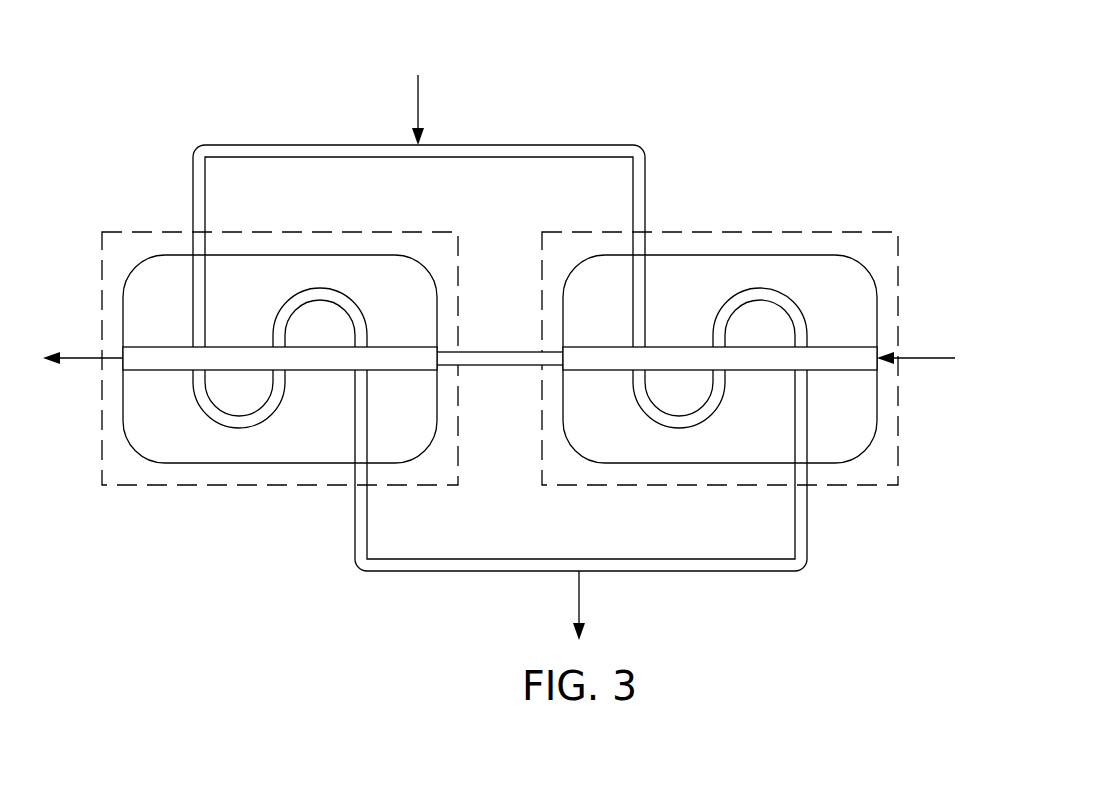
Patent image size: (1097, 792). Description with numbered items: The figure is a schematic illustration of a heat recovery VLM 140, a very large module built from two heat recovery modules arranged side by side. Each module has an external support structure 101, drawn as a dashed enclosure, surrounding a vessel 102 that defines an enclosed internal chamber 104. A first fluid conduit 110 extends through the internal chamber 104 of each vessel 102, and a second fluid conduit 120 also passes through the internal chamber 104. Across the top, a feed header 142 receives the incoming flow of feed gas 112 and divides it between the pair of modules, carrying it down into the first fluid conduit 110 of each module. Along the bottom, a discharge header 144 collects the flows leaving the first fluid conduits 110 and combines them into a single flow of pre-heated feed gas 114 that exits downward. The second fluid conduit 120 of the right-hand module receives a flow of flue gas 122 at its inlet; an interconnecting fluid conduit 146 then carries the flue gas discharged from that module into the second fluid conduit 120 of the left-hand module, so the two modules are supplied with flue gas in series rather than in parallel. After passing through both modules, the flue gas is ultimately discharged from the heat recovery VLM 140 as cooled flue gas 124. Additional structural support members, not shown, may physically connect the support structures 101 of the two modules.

The heat recovery VLM 140 is at (736, 72).
The external support structure 101 is at (263, 497).
The vessel 102 is at (203, 463).
The internal chamber 104 is at (378, 268).
The first fluid conduit 110 is at (207, 292).
The feed gas 112 is at (418, 105).
The pre-heated feed gas 114 is at (579, 600).
The second fluid conduit 120 is at (388, 346).
The flue gas 122 is at (923, 357).
The cooled flue gas 124 is at (78, 356).
The feed header 142 is at (193, 197).
The discharge header 144 is at (707, 572).
The interconnecting fluid conduit 146 is at (498, 352).